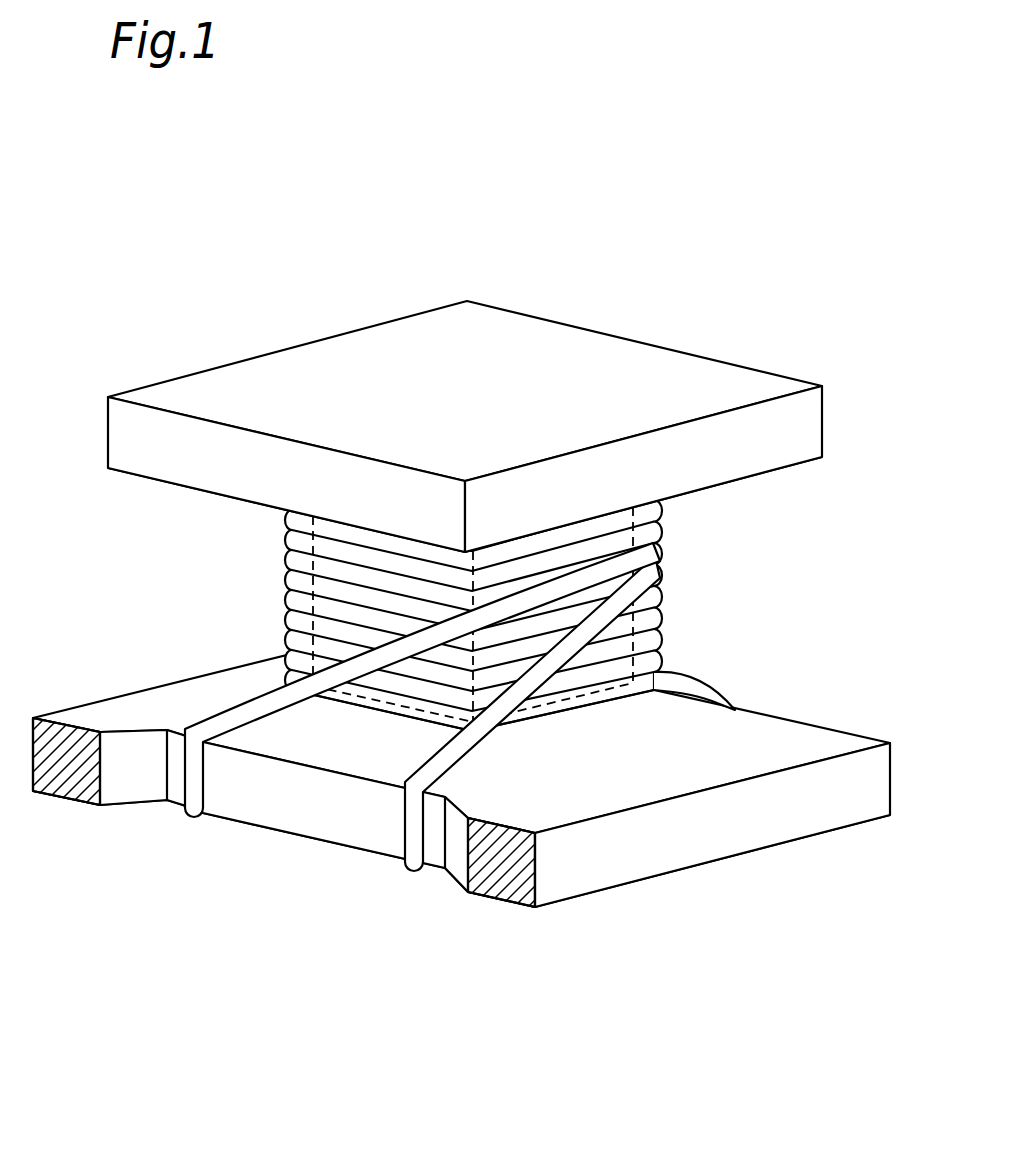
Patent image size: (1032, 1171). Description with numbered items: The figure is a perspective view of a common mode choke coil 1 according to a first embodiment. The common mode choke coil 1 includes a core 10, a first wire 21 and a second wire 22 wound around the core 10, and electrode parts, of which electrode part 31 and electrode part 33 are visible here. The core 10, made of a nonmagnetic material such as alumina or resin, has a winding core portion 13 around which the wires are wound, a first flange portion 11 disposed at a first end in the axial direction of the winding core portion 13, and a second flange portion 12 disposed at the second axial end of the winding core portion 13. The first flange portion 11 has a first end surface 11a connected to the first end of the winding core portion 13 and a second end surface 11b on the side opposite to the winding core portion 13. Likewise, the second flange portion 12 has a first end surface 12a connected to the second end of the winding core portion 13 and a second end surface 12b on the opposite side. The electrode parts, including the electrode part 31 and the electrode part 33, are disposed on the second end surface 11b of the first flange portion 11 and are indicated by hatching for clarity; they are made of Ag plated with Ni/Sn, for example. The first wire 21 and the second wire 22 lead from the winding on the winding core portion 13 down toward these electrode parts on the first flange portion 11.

The common mode choke coil 1 is at (478, 219).
The core 10 is at (332, 359).
The first flange portion 11 is at (812, 741).
The first end surface 11a is at (750, 737).
The second end surface 11b is at (713, 862).
The second flange portion 12 is at (579, 345).
The first end surface 12a is at (768, 475).
The second end surface 12b is at (680, 380).
The winding core portion 13 is at (650, 541).
The first wire 21 is at (255, 707).
The second wire 22 is at (458, 755).
The electrode part 31 is at (62, 778).
The electrode part 33 is at (490, 896).